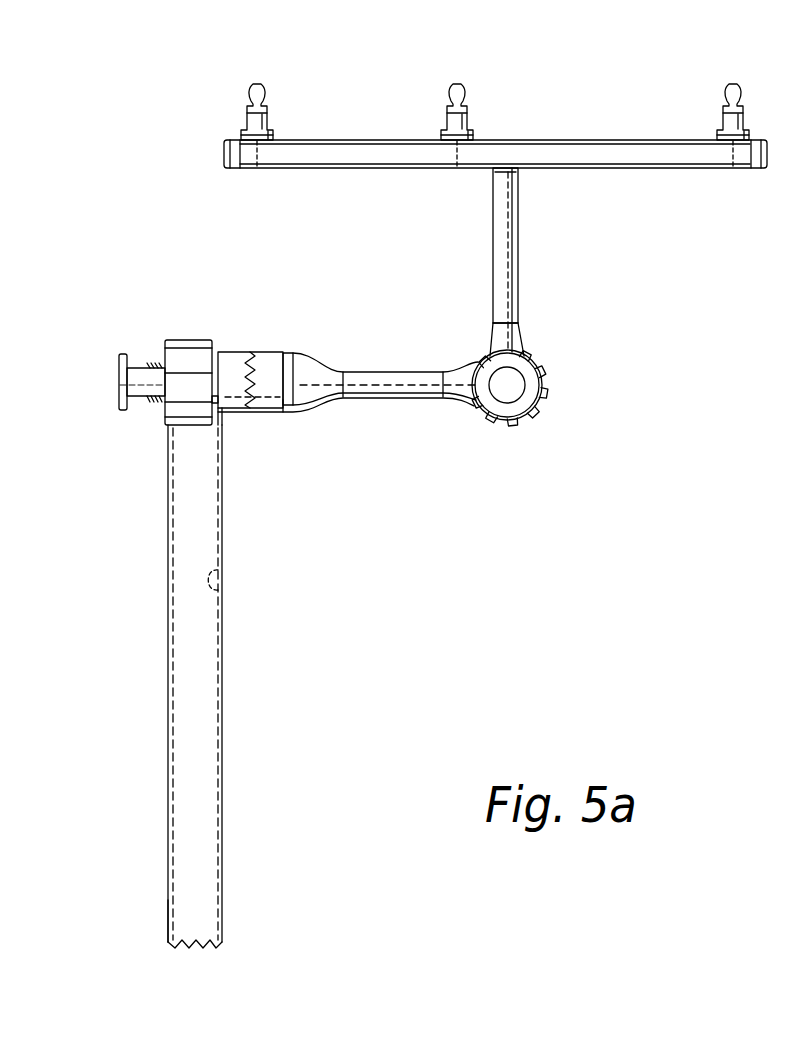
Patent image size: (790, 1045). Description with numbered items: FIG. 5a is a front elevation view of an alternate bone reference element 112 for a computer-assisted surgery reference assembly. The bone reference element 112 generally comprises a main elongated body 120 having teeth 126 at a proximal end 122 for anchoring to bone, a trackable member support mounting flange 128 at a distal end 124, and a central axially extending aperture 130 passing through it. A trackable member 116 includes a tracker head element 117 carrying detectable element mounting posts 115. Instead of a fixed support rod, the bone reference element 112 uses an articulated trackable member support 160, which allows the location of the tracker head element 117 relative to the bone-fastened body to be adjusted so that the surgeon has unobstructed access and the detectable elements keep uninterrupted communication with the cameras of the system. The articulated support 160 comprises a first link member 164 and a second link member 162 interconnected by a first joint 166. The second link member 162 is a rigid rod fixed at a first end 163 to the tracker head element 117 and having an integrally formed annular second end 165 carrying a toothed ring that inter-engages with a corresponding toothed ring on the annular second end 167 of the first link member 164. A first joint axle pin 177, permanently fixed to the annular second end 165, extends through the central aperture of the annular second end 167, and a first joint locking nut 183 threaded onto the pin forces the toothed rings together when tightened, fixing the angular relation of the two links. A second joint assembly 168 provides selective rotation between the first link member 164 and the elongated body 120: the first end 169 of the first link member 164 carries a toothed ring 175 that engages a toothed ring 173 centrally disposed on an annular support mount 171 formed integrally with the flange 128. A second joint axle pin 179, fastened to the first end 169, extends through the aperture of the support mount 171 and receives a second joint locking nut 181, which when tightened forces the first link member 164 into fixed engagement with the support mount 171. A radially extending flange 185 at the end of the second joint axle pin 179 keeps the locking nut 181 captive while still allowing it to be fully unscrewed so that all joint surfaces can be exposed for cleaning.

The bone reference element 112 is at (121, 317).
The detectable element mounting posts 115 is at (247, 120).
The trackable member 116 is at (462, 91).
The tracker head element 117 is at (352, 150).
The main elongated body 120 is at (183, 729).
The proximal end 122 is at (150, 925).
The distal end 124 is at (121, 363).
The teeth 126 is at (203, 945).
The trackable member support mounting flange 128 is at (150, 358).
The central axially extending aperture 130 is at (222, 567).
The articulated trackable member support 160 is at (478, 331).
The second link member 162 is at (508, 235).
The first end 163 is at (513, 175).
The first link member 164 is at (400, 393).
The annular second end 165 is at (518, 340).
The first joint 166 is at (552, 420).
The annular second end 167 is at (463, 400).
The second joint assembly 168 is at (235, 320).
The first end 169 is at (290, 355).
The annular support mount 171 is at (240, 410).
The toothed ring 173 is at (242, 372).
The toothed ring 175 is at (275, 408).
The first joint axle pin 177 is at (500, 383).
The second joint axle pin 179 is at (140, 378).
The second joint locking nut 181 is at (187, 362).
The first joint locking nut 183 is at (548, 370).
The radially extending flange 185 is at (118, 389).